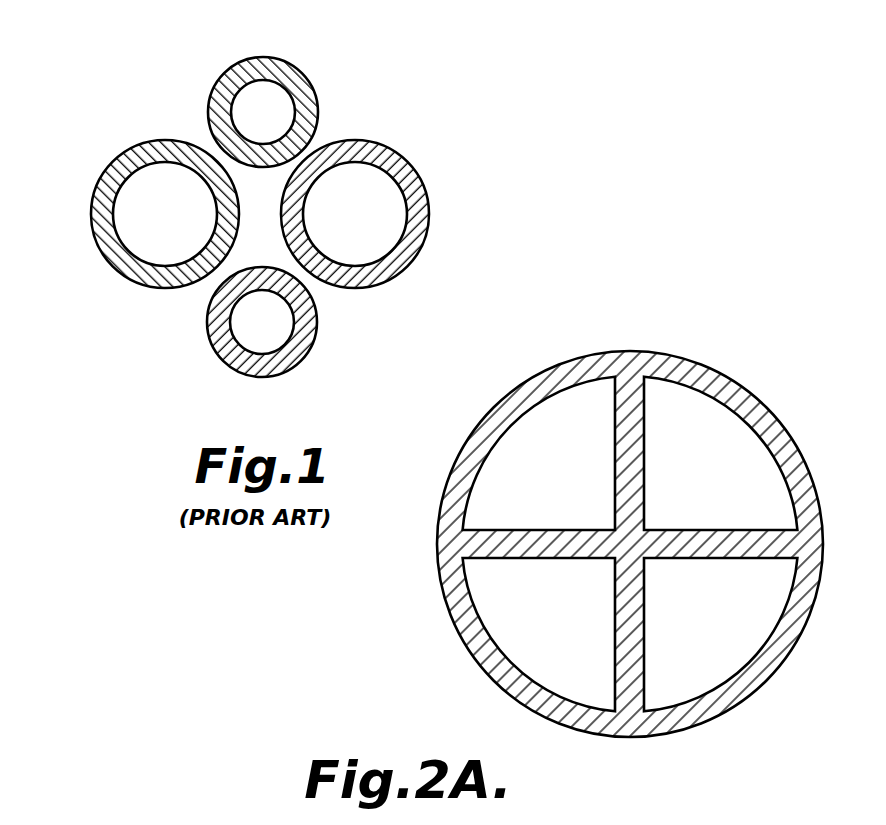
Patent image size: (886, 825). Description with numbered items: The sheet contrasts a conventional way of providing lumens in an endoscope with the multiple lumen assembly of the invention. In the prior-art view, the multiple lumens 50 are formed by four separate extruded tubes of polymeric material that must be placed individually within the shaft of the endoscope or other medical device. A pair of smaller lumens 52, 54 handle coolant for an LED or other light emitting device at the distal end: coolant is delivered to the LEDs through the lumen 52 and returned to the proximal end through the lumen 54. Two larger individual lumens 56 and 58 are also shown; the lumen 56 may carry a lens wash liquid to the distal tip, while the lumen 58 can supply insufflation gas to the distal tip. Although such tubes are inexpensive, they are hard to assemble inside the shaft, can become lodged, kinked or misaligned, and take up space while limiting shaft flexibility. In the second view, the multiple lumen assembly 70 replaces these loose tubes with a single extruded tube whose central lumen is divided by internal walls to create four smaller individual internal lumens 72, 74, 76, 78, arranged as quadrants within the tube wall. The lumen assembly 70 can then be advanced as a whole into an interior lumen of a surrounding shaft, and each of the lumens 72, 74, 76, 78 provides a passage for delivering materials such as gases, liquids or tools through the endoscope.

In FIG. 1, the multiple lumens 50 is at (138, 90).
In FIG. 1, the lumen 52 is at (306, 72).
In FIG. 1, the lumen 54 is at (262, 377).
In FIG. 1, the lumen 56 is at (91, 213).
In FIG. 1, the lumen 58 is at (429, 212).
In FIG. 2A, the multiple lumen assembly 70 is at (630, 530).
In FIG. 2A, the internal lumen 72 is at (532, 481).
In FIG. 2A, the internal lumen 74 is at (526, 624).
In FIG. 2A, the internal lumen 76 is at (687, 624).
In FIG. 2A, the internal lumen 78 is at (687, 481).